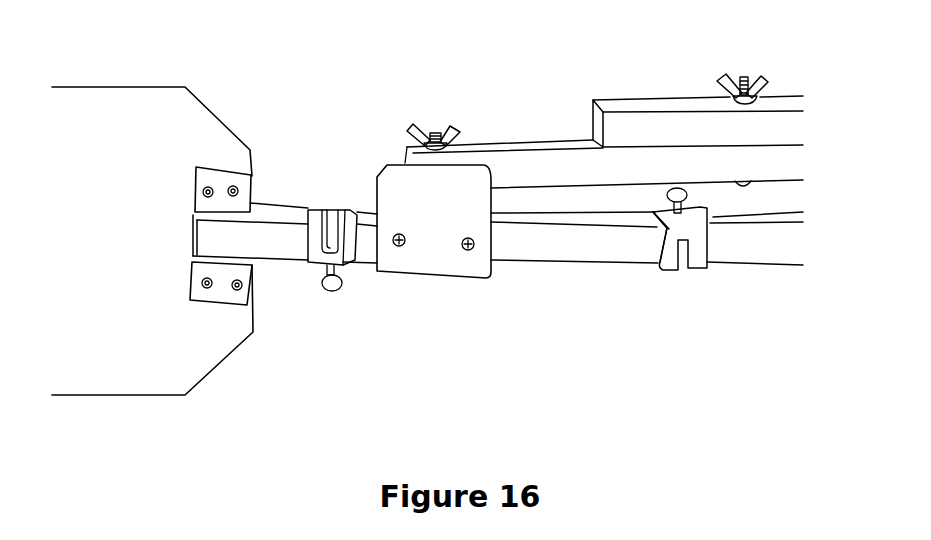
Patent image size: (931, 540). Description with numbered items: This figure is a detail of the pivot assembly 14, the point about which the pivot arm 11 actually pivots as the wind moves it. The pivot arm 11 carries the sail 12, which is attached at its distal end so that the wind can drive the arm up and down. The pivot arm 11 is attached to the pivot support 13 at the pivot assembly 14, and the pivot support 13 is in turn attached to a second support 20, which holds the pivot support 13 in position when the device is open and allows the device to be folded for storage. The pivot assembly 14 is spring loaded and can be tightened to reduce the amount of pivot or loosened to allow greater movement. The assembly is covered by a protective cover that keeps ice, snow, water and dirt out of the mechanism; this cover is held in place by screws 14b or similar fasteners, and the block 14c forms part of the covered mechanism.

The pivot arm 11 is at (625, 245).
The sail 12 is at (182, 360).
The pivot support 13 is at (560, 138).
The pivot assembly 14 is at (478, 204).
The screws 14b is at (400, 247).
The clamp block 14c is at (433, 252).
The second support 20 is at (660, 93).